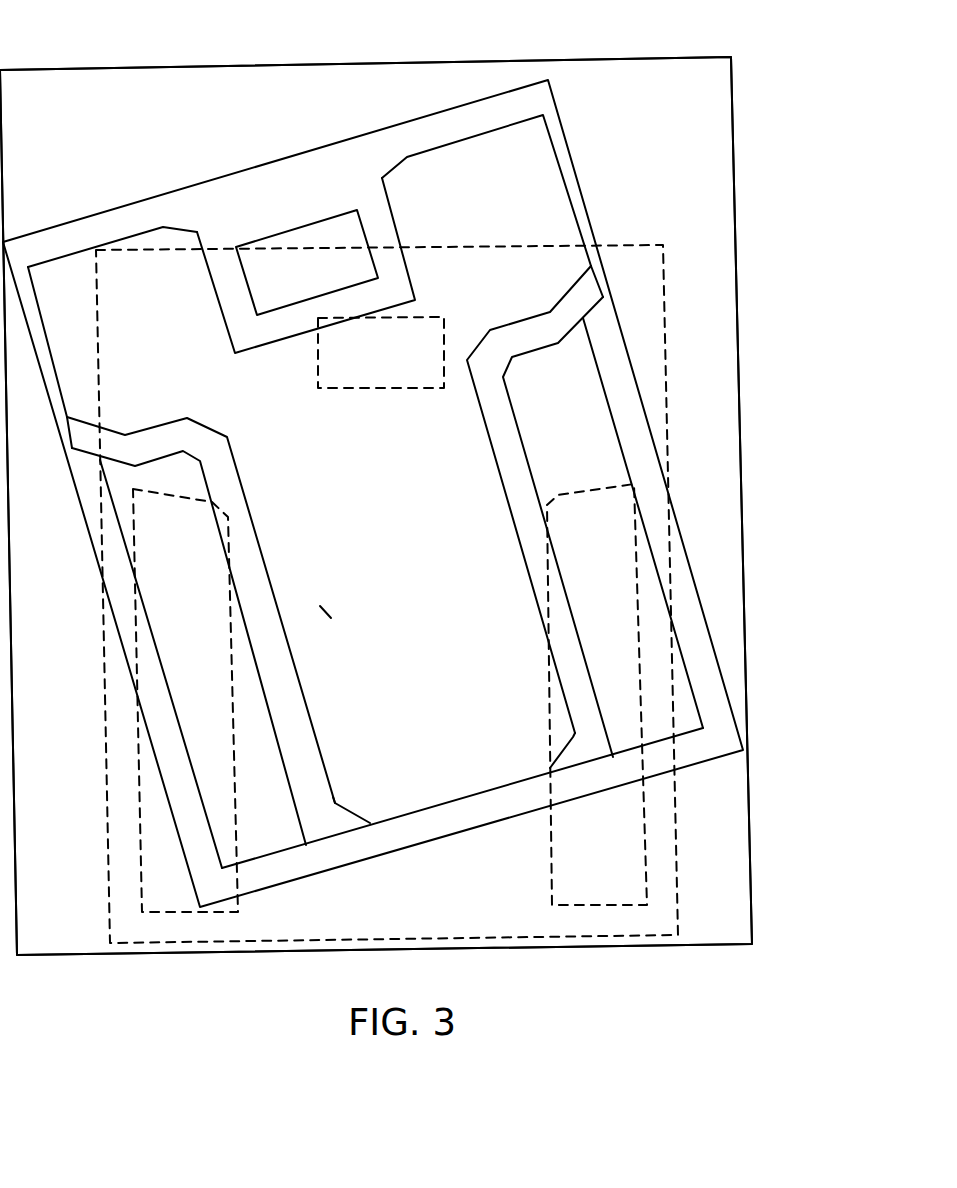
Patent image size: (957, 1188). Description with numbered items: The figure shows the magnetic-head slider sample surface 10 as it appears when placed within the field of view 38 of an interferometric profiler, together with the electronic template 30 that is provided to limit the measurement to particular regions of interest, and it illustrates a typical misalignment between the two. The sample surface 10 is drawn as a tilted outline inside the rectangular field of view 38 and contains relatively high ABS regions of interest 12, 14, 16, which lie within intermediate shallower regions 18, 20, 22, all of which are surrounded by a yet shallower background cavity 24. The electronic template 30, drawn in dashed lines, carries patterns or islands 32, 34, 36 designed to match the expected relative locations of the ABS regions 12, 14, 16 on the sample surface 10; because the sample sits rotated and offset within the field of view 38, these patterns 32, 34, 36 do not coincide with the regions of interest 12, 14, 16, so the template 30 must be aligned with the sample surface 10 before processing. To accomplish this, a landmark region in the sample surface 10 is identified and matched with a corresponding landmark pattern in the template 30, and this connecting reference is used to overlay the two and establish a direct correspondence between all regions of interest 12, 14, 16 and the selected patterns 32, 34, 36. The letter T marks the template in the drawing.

The sample surface 10 is at (567, 82).
The region of interest 12 is at (345, 255).
The region of interest 14 is at (242, 632).
The region of interest 16 is at (635, 518).
The intermediate shallower region 18 is at (313, 800).
The intermediate shallower region 20 is at (587, 722).
The intermediate shallower region 22 is at (227, 263).
The background cavity 24 is at (453, 572).
The electronic template 30 is at (667, 367).
The pattern 32 is at (380, 390).
The pattern 34 is at (140, 845).
The pattern 36 is at (552, 877).
The field of view 38 is at (670, 185).
The template T is at (760, 903).